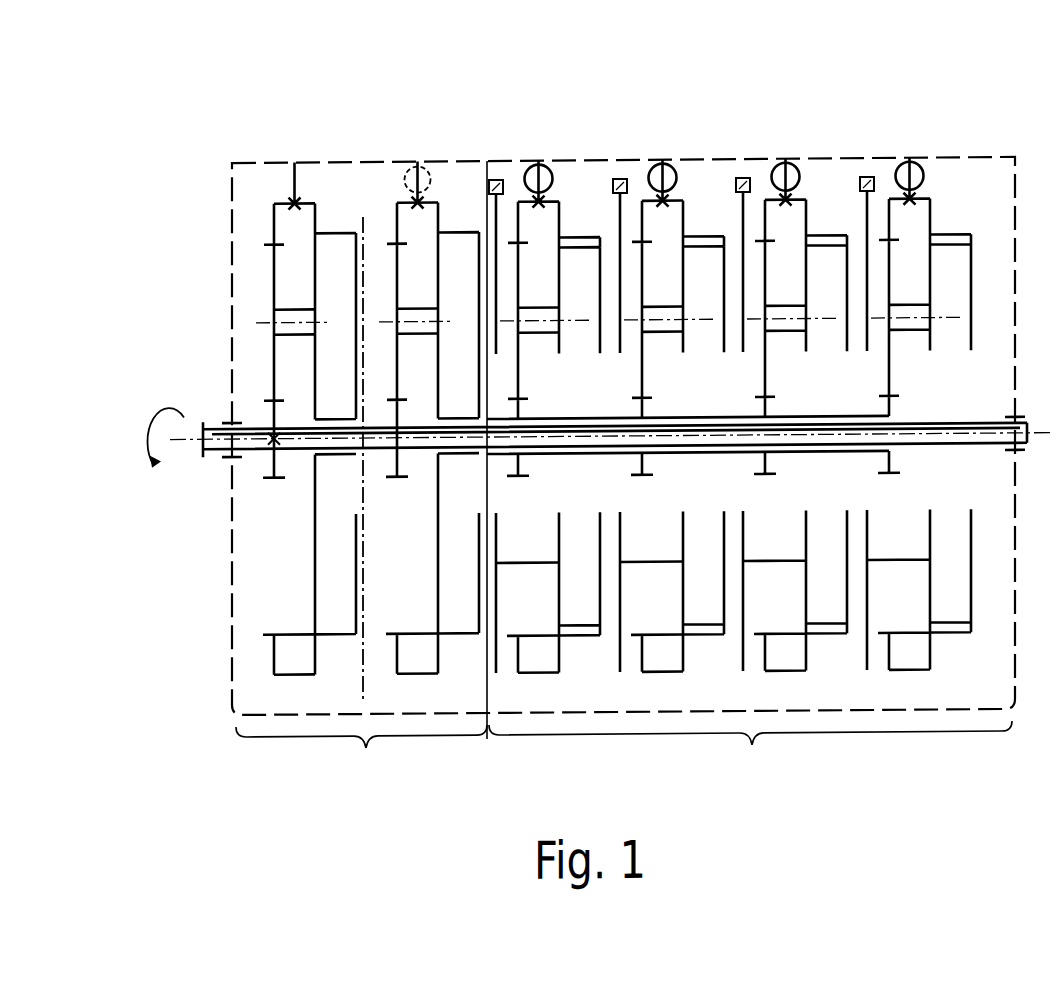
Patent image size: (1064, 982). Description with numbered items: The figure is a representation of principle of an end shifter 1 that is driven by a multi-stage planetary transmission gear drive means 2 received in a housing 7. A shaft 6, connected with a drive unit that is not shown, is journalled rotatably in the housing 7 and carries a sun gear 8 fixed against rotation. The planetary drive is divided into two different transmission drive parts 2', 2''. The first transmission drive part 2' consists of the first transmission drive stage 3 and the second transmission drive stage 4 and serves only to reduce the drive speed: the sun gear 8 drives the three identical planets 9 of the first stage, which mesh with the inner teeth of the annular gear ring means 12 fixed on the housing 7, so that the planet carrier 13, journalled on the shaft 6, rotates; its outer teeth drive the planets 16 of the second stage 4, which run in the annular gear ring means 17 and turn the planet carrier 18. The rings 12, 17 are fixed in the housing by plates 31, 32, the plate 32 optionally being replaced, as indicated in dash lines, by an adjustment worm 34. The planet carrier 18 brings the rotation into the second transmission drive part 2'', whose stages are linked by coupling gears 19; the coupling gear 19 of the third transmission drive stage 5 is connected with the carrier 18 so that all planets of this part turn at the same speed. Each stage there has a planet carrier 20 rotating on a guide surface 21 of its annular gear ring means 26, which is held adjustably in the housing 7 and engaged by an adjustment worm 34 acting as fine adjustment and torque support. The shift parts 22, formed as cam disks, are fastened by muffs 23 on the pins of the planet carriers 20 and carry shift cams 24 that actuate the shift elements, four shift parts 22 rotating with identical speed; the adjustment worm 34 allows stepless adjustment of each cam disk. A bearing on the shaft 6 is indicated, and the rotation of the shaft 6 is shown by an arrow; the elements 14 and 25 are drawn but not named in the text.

The end shifter 1 is at (180, 598).
The planetary transmission gear drive means 2 is at (611, 457).
The first transmission drive part 2' is at (361, 754).
The second transmission drive part 2'' is at (750, 751).
The first transmission drive stage 3 is at (322, 230).
The second transmission drive stage 4 is at (445, 231).
The third transmission drive stage 5 is at (565, 224).
The shaft 6 is at (212, 424).
The housing 7 is at (258, 158).
The sun gear 8 is at (268, 462).
The planet 9 is at (266, 283).
The annular gear ring means 12 is at (270, 228).
The planet carrier 13 is at (316, 375).
The clutch 14 is at (327, 340).
The planet 16 is at (398, 350).
The annular gear ring means 17 is at (400, 228).
The planet carrier 18 is at (438, 293).
The coupling gear 19 is at (806, 418).
The planet carrier 20 is at (557, 607).
The guide surface 21 is at (578, 233).
The shift part 22 is at (497, 640).
The muff 23 is at (521, 563).
The shift cam 24 is at (494, 176).
The hub 25 is at (520, 345).
The annular gear ring means 26 is at (566, 205).
The plate 31 is at (300, 196).
The plate 32 is at (664, 132).
The adjustment worm 34 is at (905, 165).